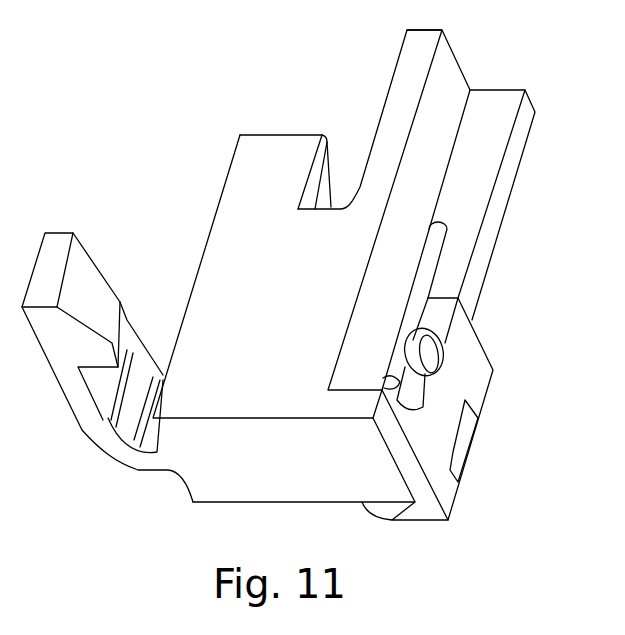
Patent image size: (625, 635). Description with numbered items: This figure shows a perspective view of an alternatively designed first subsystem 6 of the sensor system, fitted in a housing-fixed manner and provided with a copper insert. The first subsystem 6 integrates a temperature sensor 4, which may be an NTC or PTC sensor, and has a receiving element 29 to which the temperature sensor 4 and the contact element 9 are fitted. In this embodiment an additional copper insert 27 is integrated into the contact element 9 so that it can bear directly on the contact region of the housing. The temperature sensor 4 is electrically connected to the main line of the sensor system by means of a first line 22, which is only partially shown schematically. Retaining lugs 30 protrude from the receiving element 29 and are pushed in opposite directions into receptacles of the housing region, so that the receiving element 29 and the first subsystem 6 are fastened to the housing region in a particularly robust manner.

The first subsystem 6 is at (206, 125).
The receiving element 29 is at (230, 280).
The retaining lug 30 is at (272, 160).
The first line 22 is at (437, 237).
The temperature sensor 4 is at (449, 348).
The contact element 9 is at (463, 375).
The copper insert 27 is at (465, 433).